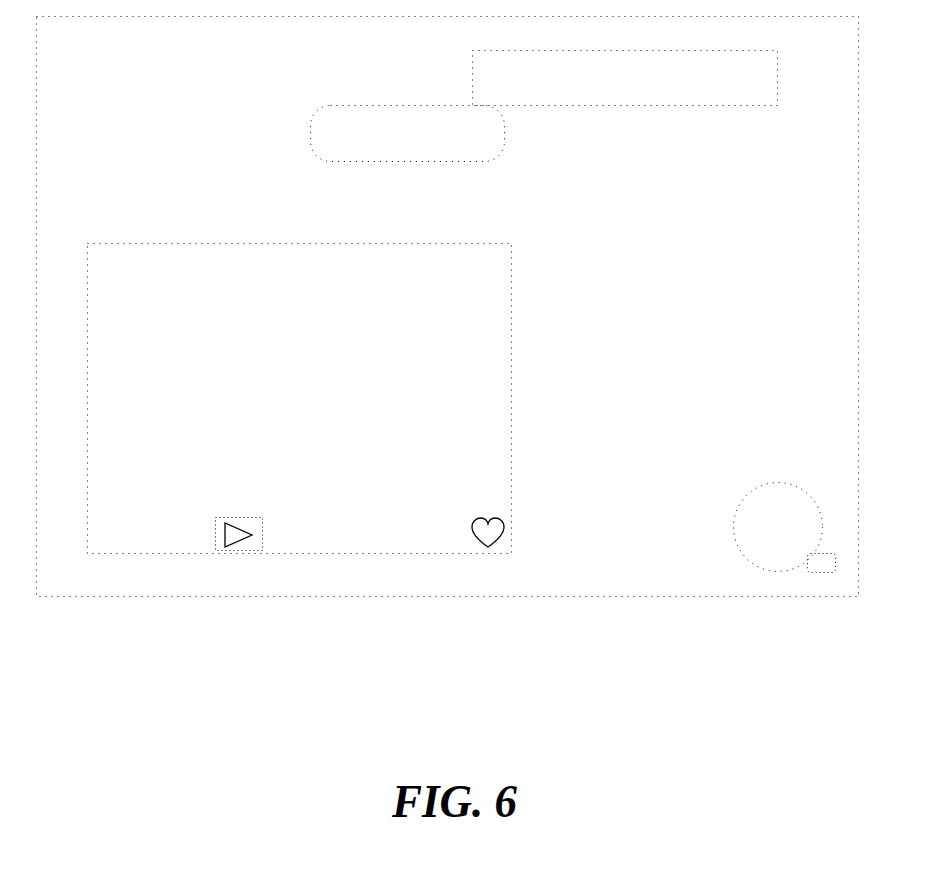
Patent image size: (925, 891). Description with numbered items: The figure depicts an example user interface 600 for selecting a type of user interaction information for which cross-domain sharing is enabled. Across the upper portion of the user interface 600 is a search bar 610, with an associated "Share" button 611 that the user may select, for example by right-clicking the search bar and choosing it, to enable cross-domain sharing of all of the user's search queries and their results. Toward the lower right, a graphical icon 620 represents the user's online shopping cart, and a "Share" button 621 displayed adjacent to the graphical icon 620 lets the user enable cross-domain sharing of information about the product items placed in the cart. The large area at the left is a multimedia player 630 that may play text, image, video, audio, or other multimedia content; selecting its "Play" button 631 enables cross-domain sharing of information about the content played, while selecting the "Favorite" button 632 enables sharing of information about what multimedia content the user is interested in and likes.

The user interface 600 is at (207, 596).
The search bar 610 is at (625, 78).
The "Share" button 611 is at (394, 161).
The graphical icon 620 is at (778, 527).
The "Share" button 621 is at (822, 567).
The multimedia player 630 is at (86, 407).
The "Play" button 631 is at (220, 525).
The "Favorite" button 632 is at (480, 533).